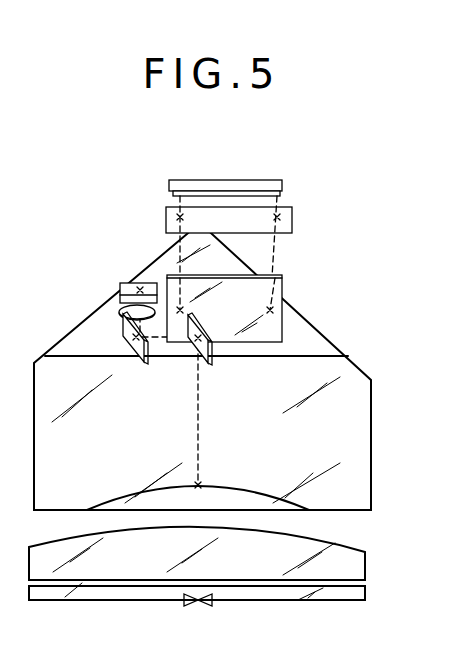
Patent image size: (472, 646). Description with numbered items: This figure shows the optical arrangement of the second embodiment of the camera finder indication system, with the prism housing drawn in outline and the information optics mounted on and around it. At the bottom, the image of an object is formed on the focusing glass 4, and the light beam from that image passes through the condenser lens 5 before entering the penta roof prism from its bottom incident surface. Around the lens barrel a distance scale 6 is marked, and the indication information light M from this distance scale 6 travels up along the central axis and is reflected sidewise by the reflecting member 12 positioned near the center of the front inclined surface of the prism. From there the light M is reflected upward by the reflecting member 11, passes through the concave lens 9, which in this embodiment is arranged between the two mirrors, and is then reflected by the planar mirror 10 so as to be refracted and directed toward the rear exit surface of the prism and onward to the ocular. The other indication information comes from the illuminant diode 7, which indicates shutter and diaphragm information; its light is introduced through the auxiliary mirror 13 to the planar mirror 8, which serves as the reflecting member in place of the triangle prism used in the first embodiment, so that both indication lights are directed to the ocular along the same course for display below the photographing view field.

The focusing glass 4 is at (368, 596).
The condenser lens 5 is at (368, 565).
The distance scale 6 is at (245, 497).
The illuminant diode 7 is at (289, 224).
The planar mirror 8 is at (273, 297).
The concave lens 9 is at (125, 312).
The planar mirror 10 is at (127, 283).
The planar mirror 11 is at (142, 358).
The prism mirror 12 is at (213, 362).
The auxiliary mirror 13 is at (226, 185).
The indication information light M is at (200, 442).